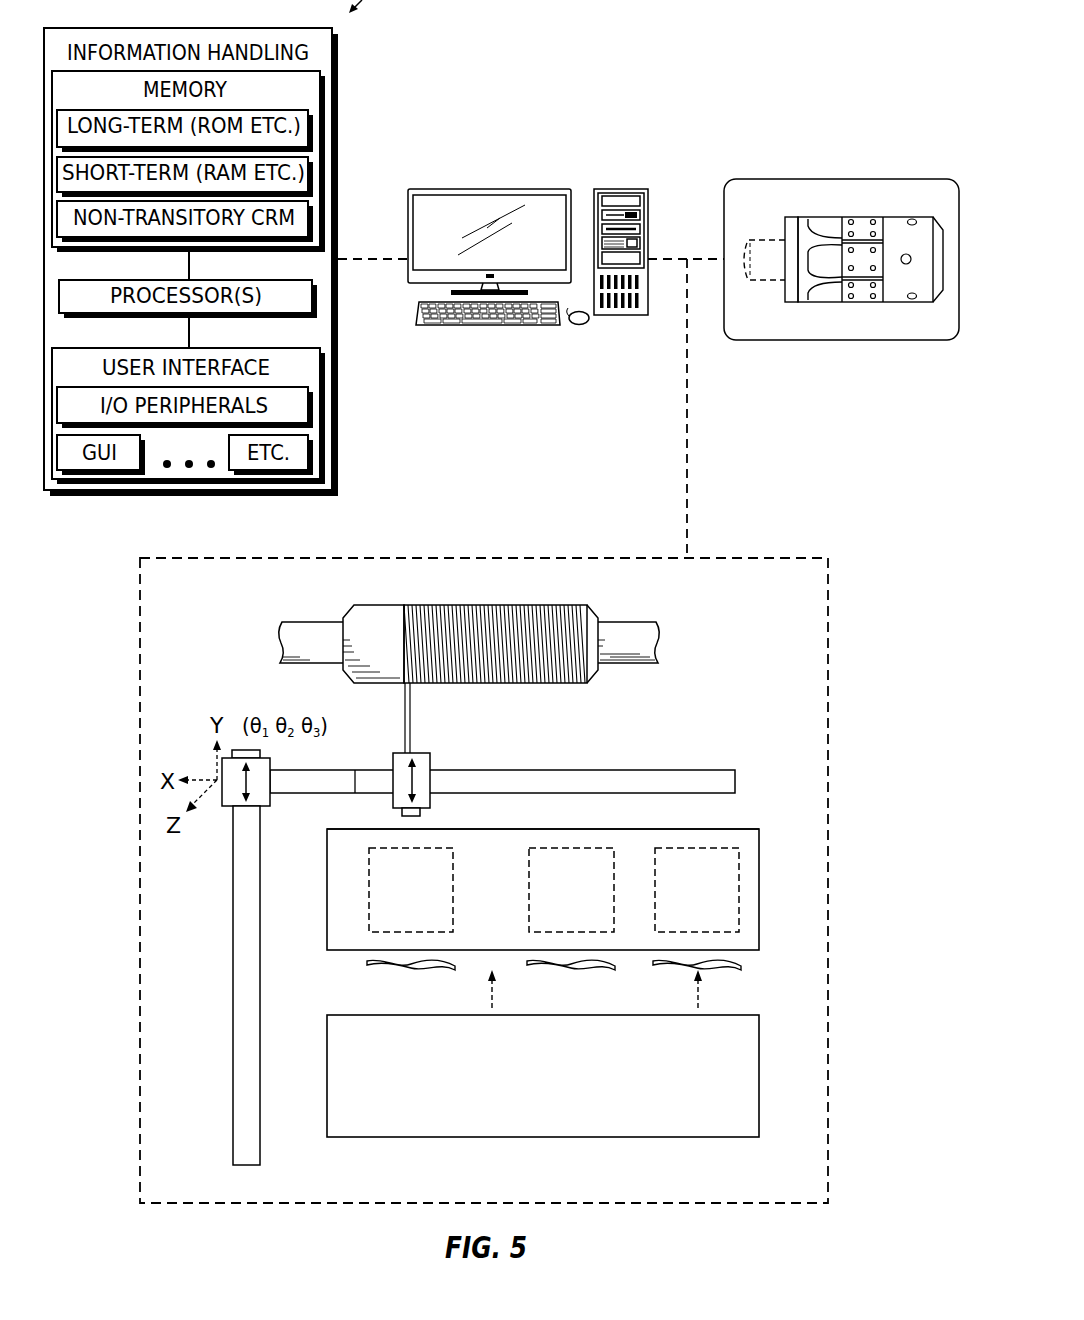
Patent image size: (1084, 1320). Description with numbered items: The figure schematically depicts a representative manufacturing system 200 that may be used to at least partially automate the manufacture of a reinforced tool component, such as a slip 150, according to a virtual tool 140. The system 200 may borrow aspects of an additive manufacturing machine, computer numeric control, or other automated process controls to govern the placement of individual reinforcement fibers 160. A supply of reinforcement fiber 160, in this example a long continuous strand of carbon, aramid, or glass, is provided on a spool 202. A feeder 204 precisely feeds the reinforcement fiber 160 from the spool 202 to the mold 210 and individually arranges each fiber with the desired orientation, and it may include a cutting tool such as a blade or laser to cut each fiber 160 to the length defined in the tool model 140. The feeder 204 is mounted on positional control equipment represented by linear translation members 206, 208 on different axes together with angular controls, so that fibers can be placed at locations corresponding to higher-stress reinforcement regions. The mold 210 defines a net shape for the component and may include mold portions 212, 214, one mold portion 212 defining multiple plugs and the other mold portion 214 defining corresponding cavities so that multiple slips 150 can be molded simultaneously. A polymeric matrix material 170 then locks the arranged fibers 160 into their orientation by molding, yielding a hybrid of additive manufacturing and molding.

The virtual tool 140 is at (843, 179).
The slip 150 is at (437, 848).
The reinforcement fiber 160 is at (470, 605).
The polymeric matrix material 170 is at (400, 968).
The manufacturing system 200 is at (790, 558).
The spool 202 is at (639, 606).
The feeder 204 is at (430, 755).
The linear translation member 206 is at (622, 770).
The linear translation member 208 is at (233, 948).
The mold 210 is at (768, 877).
The mold portion 212 is at (678, 829).
The mold portion 214 is at (542, 1015).